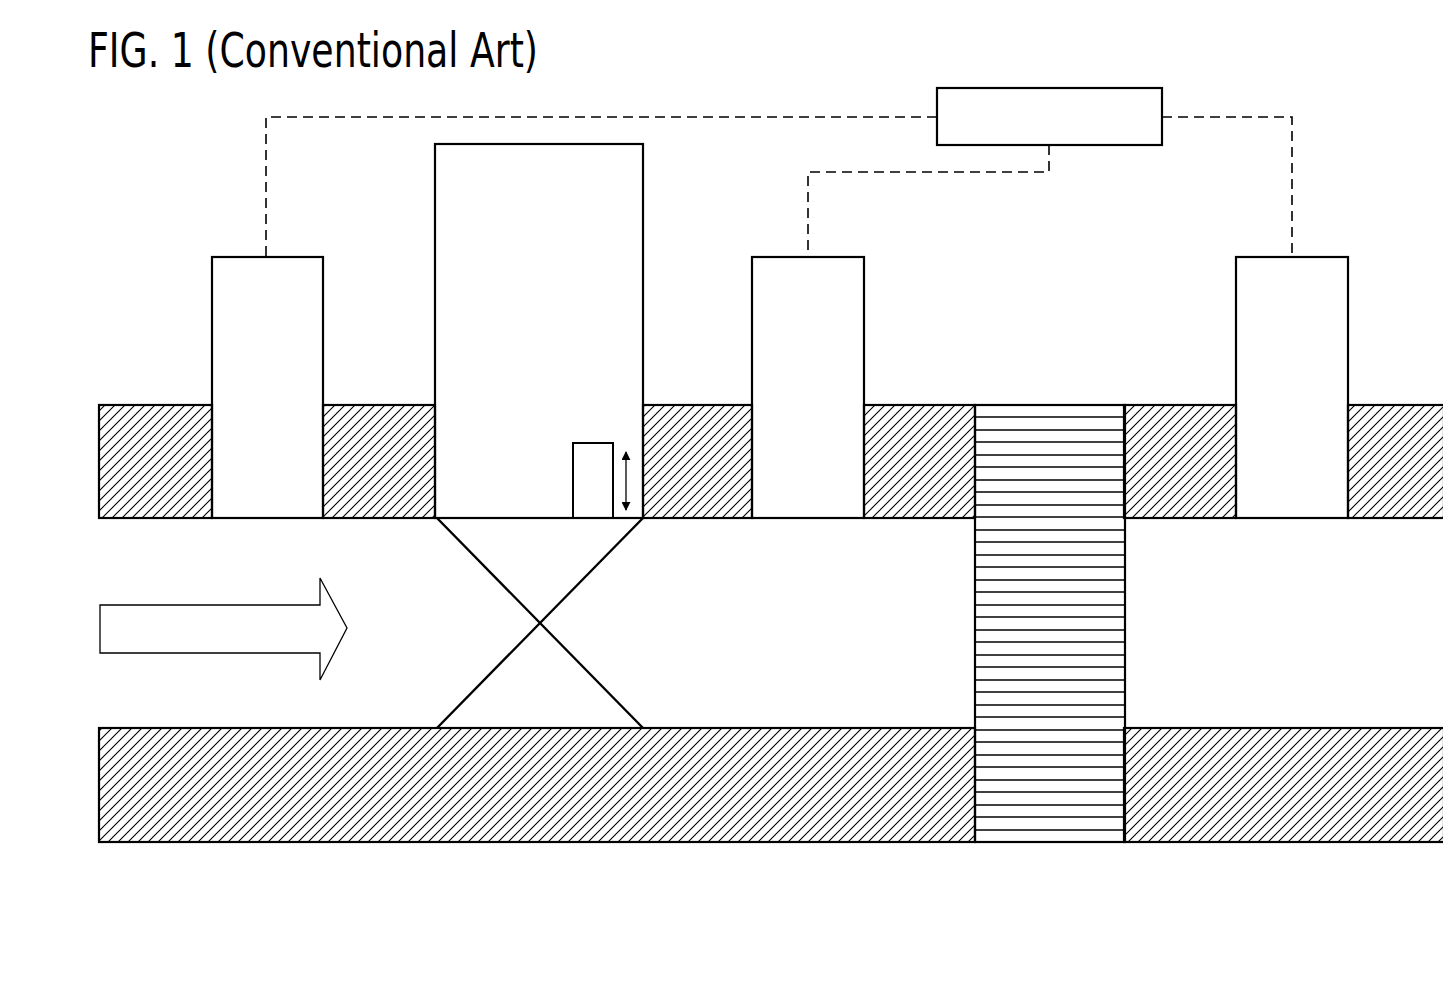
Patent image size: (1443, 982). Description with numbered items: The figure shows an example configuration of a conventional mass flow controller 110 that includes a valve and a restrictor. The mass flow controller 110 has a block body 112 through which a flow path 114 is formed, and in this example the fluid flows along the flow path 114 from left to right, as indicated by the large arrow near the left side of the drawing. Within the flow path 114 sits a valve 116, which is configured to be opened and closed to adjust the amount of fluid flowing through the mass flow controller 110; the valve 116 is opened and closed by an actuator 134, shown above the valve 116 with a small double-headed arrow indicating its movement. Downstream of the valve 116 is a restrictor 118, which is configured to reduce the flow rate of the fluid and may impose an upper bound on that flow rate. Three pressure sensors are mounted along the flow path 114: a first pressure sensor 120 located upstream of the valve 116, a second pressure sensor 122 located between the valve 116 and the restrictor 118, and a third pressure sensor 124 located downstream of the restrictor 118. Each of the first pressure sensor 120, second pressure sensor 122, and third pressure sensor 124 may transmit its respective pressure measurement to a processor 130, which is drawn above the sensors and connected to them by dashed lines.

The mass flow controller 110 is at (149, 259).
The block body 112 is at (777, 843).
The flow path 114 is at (204, 641).
The valve 116 is at (489, 577).
The restrictor 118 is at (973, 625).
The first pressure sensor 120 is at (249, 399).
The second pressure sensor 122 is at (790, 399).
The third pressure sensor 124 is at (1274, 399).
The processor 130 is at (1032, 130).
The actuator 134 is at (594, 518).